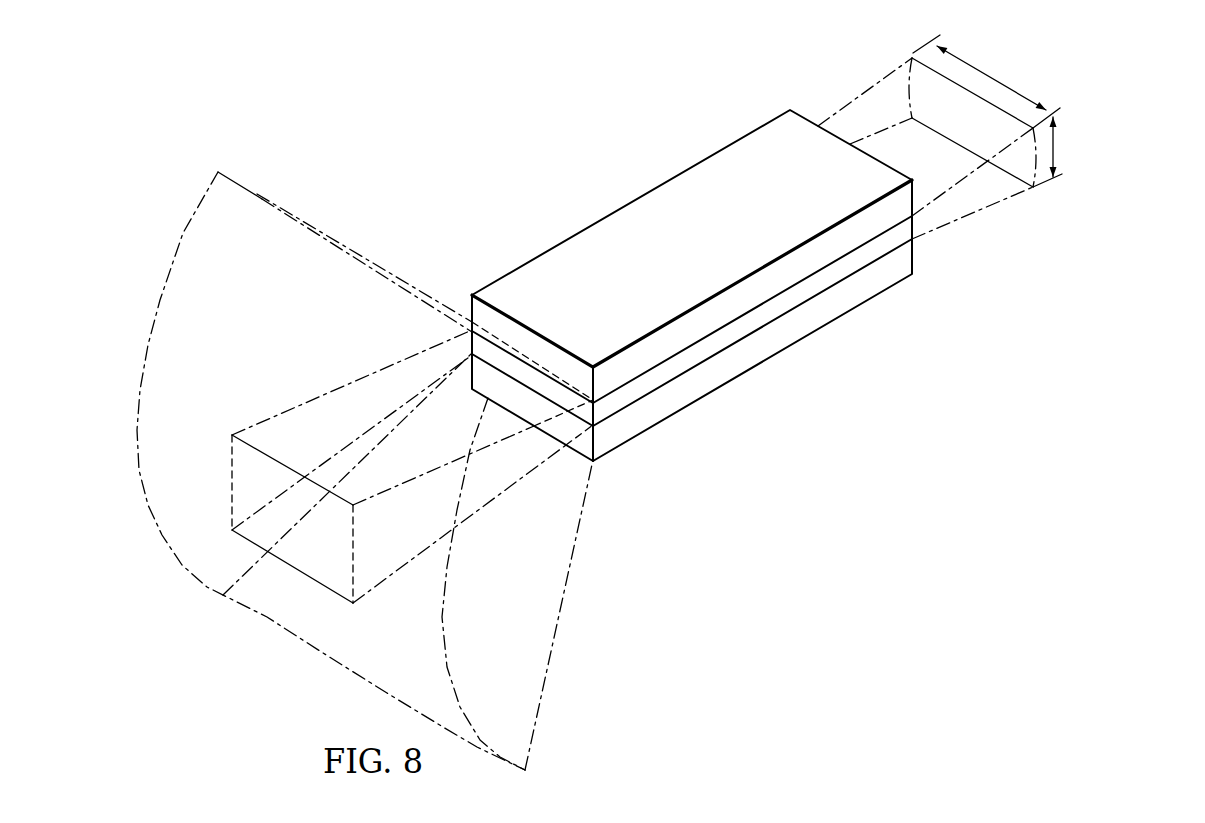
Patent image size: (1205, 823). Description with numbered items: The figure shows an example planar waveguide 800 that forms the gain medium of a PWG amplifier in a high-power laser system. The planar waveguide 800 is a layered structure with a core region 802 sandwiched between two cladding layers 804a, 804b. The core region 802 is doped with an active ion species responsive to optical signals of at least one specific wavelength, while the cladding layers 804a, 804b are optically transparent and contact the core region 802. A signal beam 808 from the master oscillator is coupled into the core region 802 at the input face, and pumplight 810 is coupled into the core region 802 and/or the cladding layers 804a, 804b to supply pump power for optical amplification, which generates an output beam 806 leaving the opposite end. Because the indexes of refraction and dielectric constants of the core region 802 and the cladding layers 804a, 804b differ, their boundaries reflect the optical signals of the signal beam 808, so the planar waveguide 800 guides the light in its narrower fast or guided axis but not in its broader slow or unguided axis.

The planar waveguide 800 is at (457, 137).
The core region 802 is at (823, 280).
The cladding layer 804a is at (640, 208).
The cladding layer 804b is at (687, 397).
The output beam 806 is at (963, 217).
The signal beam 808 is at (318, 397).
The pumplight 810 is at (167, 277).